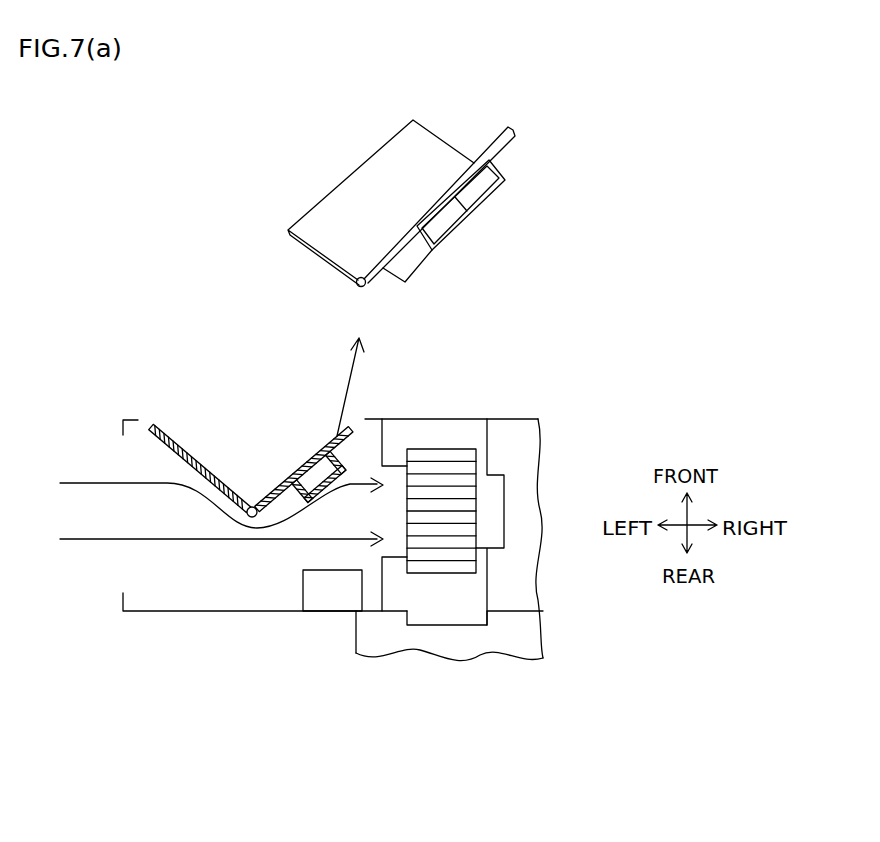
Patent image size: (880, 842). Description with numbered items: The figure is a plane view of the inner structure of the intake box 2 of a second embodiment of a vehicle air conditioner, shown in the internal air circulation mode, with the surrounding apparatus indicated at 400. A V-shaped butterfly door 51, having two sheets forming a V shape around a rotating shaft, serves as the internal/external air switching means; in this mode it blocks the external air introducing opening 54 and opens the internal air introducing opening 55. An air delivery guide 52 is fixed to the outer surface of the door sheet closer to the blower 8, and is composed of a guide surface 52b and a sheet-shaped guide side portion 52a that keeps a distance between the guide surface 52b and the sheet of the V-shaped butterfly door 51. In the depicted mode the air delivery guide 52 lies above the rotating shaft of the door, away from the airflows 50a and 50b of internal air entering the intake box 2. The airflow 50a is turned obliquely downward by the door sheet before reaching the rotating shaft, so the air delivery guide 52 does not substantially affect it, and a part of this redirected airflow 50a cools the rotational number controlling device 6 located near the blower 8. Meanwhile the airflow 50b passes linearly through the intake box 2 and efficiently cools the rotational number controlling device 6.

The intake box 2 is at (395, 419).
The rotational number controlling device 6 is at (303, 598).
The blower 8 is at (440, 449).
The airflow of internal air 50a is at (70, 483).
The airflow of internal air 50b is at (75, 539).
The V-shaped butterfly door 51 is at (431, 131).
The air delivery guide 52 is at (479, 218).
The guide side portion 52a is at (412, 257).
The guide surface 52b is at (460, 229).
The external air introducing opening 54 is at (140, 425).
The internal air introducing opening 55 is at (123, 600).
The apparatus body 400 is at (461, 482).